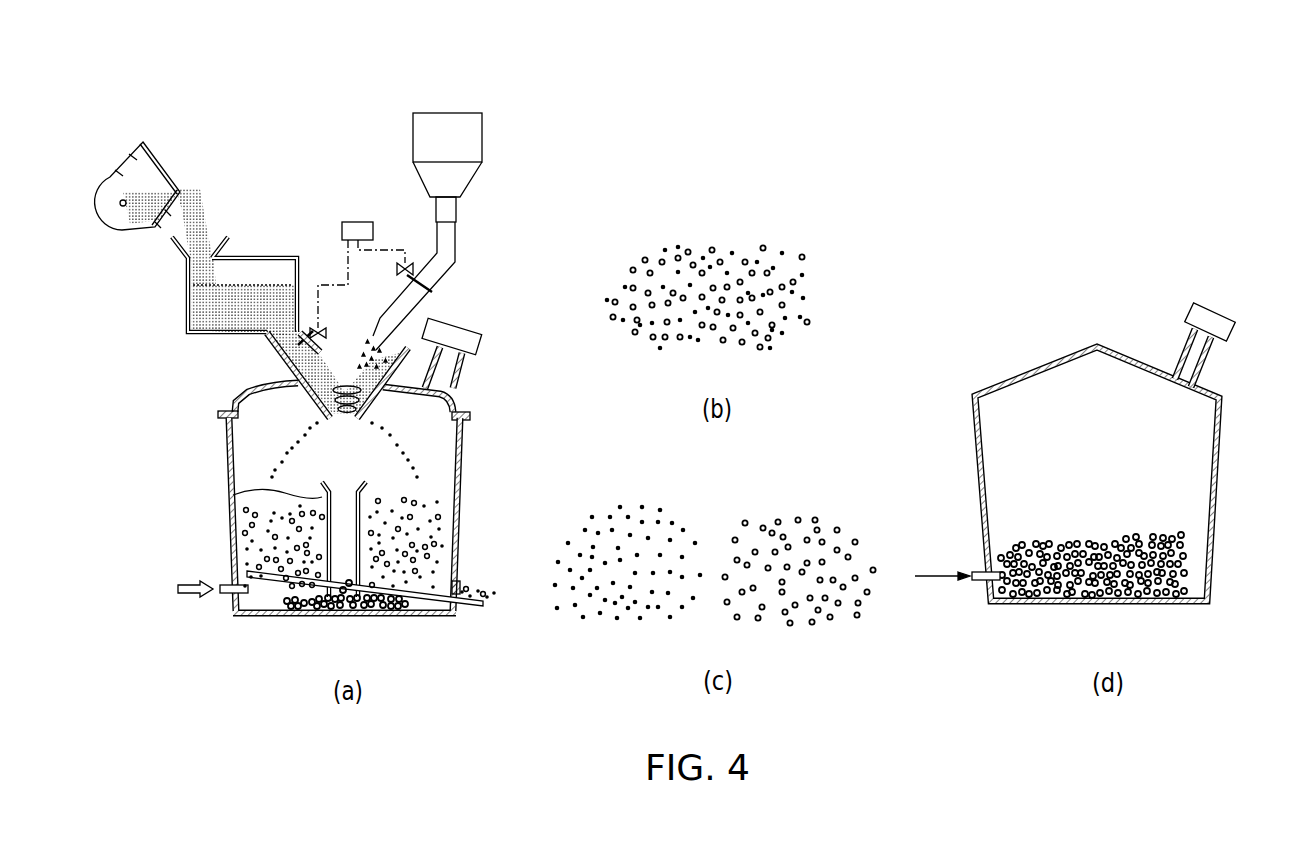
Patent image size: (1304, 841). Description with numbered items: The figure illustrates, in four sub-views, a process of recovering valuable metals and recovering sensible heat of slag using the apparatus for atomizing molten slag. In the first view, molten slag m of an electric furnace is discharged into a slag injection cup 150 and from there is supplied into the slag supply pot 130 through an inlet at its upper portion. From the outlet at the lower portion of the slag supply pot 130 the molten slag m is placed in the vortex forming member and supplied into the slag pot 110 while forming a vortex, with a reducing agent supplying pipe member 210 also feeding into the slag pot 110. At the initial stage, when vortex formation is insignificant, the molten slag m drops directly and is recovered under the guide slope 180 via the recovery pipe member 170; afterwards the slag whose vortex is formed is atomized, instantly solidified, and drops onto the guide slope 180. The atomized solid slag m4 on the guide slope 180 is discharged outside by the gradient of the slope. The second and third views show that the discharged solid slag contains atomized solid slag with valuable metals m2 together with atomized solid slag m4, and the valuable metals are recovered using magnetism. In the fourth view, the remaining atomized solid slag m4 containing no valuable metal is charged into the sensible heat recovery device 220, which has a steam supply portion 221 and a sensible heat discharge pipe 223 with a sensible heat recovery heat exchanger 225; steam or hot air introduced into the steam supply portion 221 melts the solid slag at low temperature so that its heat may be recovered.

The slag injection cup 150 is at (133, 154).
The slag supply pot 130 is at (270, 258).
The molten slag m is at (190, 302).
The reducing agent supplying pipe member 210 is at (443, 275).
The slag pot 110 is at (465, 446).
The recovery pipe member 170 is at (233, 494).
The guide slope 180 is at (462, 608).
The atomized solid slag containing valuable metals m2 is at (438, 505).
The atomized solid slag m4 is at (441, 521).
The sensible heat recovery device 220 is at (1214, 467).
The sensible heat discharge pipe 223 is at (1215, 358).
The sensible heat recovery heat exchanger 225 is at (1208, 304).
The steam supply portion 221 is at (975, 570).